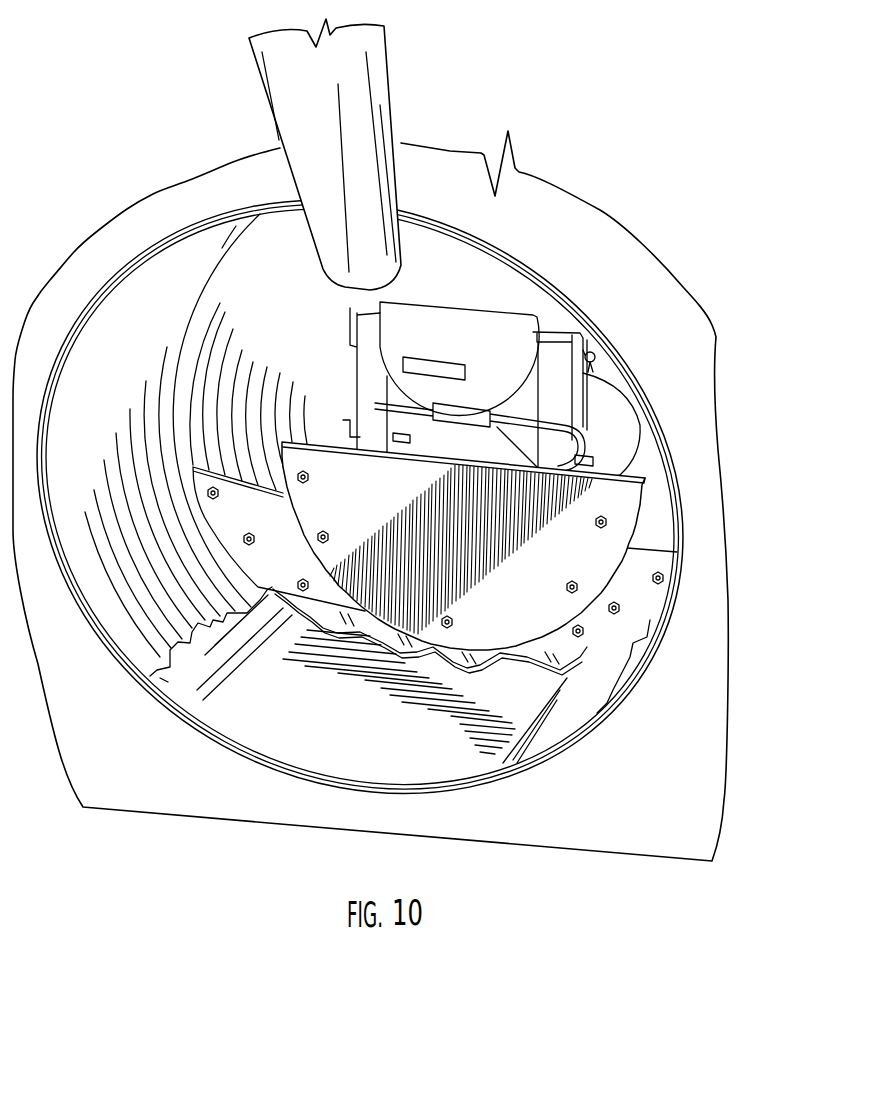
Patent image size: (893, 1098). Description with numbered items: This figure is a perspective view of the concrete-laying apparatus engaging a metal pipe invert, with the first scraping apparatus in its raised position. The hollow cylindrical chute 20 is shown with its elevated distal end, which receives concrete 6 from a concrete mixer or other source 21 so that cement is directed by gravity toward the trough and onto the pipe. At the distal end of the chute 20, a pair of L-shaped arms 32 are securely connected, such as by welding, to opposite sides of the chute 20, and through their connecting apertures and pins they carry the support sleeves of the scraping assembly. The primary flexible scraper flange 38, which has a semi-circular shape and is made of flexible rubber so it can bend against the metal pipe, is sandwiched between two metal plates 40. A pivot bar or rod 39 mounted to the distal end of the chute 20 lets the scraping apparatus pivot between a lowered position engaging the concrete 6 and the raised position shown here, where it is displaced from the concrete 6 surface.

The concrete 6 is at (320, 727).
The chute 20 is at (471, 344).
The concrete mixer or other source 21 is at (356, 119).
The L-shaped arms 32 is at (357, 317).
The primary flexible scraper flange 38 is at (268, 526).
The pivot bar or rod 39 is at (388, 408).
The metal plates 40 is at (540, 595).